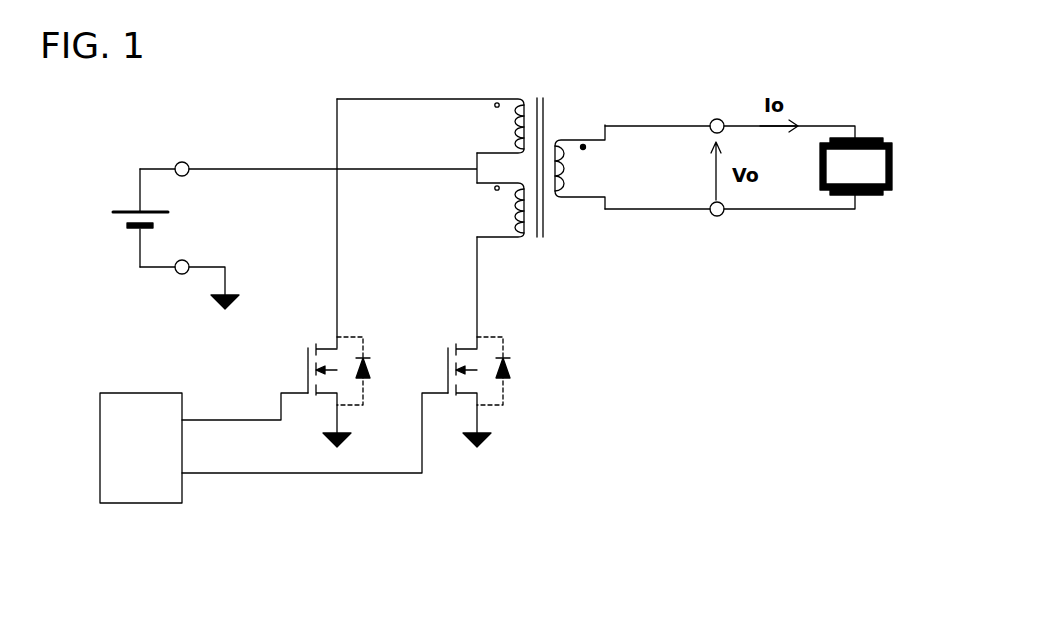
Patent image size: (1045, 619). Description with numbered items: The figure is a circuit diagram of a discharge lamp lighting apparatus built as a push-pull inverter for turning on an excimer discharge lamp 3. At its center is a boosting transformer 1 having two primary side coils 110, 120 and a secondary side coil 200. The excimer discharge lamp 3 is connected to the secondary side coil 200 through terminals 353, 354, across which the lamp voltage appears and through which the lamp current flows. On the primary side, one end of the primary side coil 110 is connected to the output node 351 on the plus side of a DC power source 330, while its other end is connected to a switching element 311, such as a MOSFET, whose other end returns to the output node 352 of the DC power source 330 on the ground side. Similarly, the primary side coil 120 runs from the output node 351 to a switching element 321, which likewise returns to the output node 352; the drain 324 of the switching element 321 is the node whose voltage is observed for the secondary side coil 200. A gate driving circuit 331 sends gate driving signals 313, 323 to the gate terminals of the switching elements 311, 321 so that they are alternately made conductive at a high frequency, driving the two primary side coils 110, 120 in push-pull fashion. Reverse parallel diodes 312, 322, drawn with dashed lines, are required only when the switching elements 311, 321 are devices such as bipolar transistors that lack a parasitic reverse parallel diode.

The boosting transformer 1 is at (549, 90).
The excimer discharge lamp 3 is at (892, 168).
The primary side coil 110 is at (506, 114).
The primary side coil 120 is at (506, 196).
The secondary side coil 200 is at (577, 167).
The switching element 311 is at (306, 356).
The reverse parallel diode 312 is at (374, 373).
The gate driving signal 313 is at (228, 420).
The switching element 321 is at (446, 356).
The reverse parallel diode 322 is at (512, 373).
The gate driving signal 323 is at (233, 474).
The drain 324 is at (478, 283).
The DC power source 330 is at (118, 211).
The gate driving circuit 331 is at (141, 448).
The output node 351 is at (178, 163).
The output node 352 is at (180, 275).
The terminal 353 is at (713, 120).
The terminal 354 is at (713, 216).